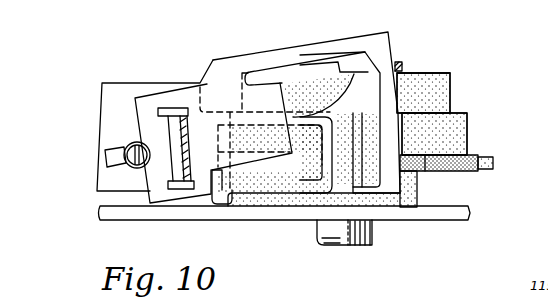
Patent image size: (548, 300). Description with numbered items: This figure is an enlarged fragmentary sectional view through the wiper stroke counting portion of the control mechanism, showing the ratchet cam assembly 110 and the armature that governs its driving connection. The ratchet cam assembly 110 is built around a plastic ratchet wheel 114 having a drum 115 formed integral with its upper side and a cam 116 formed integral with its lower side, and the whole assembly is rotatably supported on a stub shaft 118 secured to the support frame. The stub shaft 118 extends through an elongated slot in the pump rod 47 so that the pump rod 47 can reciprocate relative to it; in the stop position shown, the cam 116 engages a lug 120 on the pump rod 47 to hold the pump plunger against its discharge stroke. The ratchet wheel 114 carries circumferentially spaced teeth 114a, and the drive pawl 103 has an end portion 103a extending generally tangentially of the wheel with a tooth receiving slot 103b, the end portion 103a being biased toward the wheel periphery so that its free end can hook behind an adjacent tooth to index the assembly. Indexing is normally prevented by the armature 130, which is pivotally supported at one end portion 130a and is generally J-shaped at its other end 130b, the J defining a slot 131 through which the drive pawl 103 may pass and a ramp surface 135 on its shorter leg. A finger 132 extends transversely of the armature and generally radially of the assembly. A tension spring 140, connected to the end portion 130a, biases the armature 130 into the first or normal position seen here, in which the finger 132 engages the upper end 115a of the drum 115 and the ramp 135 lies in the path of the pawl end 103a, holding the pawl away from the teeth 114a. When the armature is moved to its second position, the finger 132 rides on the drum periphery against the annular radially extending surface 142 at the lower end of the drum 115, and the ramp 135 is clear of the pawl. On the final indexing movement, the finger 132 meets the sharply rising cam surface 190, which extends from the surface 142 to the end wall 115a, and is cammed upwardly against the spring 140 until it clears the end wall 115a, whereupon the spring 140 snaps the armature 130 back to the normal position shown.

The pump rod 47 is at (137, 213).
The drive pawl 103 is at (105, 178).
The end portion of the drive pawl 103a is at (284, 187).
The tooth receiving window or slot 103b is at (309, 180).
The ratchet cam assembly 110 is at (468, 93).
The ratchet wheel 114 is at (472, 163).
The teeth 114a is at (420, 157).
The drum 115 is at (450, 85).
The upper end of the drum 115a is at (425, 73).
The cam 116 is at (417, 188).
The stub shaft 118 is at (328, 240).
The lug or tab 120 is at (220, 197).
The armature or control element 130 is at (243, 67).
The end portion of the armature 130a is at (148, 107).
The J-shaped end of the armature 130b is at (335, 47).
The slot 131 is at (367, 97).
The finger or flange 132 is at (347, 62).
The ramp portion or surface 135 is at (378, 185).
The tension spring 140 is at (128, 152).
The annular radially extending surface 142 is at (450, 115).
The cam surface 190 is at (323, 102).